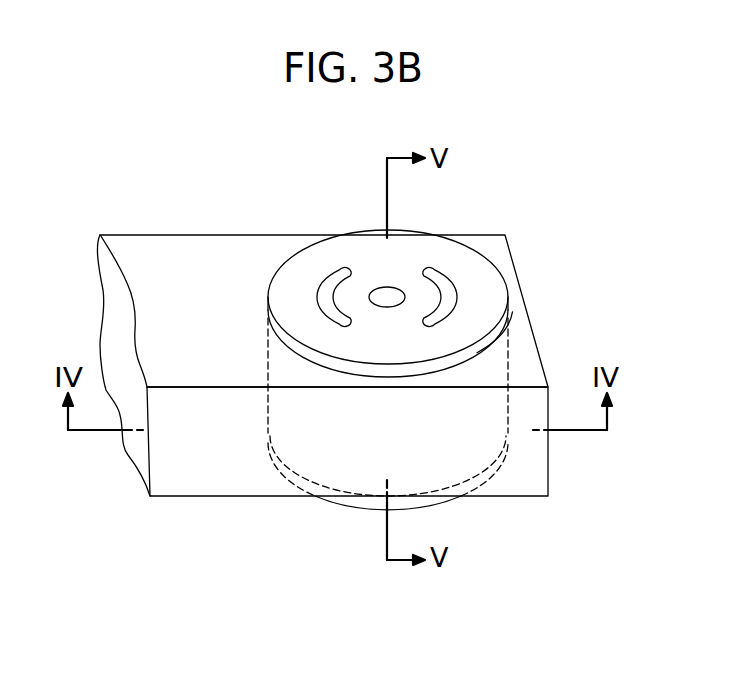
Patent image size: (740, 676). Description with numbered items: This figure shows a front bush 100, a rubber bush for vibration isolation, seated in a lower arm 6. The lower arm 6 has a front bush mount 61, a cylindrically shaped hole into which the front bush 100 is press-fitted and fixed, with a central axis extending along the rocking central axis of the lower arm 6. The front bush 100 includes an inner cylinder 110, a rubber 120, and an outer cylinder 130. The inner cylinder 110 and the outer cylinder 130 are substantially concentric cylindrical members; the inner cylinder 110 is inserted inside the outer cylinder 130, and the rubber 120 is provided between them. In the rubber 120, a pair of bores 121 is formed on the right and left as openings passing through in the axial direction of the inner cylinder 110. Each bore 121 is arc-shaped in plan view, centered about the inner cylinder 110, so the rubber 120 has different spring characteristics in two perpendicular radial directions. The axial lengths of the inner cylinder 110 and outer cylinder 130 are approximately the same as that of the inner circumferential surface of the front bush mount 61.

The lower arm 6 is at (160, 267).
The front bush mount 61 is at (483, 354).
The front bush 100 is at (335, 279).
The inner cylinder 110 is at (393, 287).
The rubber 120 is at (356, 253).
The bores 121 is at (322, 292).
The outer cylinder 130 is at (330, 454).